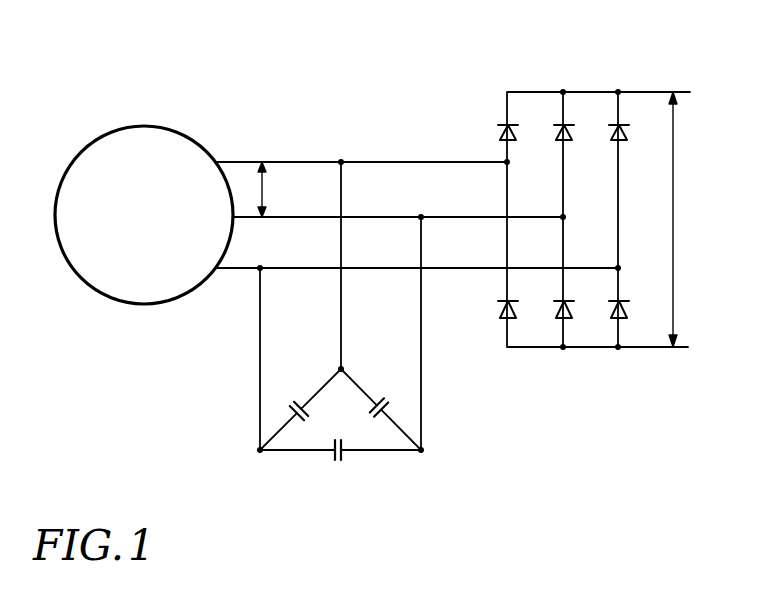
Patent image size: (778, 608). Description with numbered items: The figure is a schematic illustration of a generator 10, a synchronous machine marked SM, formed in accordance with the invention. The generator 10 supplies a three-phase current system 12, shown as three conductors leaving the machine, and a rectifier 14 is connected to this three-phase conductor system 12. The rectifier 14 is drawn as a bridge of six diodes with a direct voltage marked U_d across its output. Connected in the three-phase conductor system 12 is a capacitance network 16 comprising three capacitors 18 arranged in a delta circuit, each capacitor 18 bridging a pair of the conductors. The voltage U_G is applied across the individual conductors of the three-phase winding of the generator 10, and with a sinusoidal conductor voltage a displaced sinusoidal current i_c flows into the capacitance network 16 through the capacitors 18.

The generator 10 is at (274, 90).
The three-phase current system 12 is at (204, 326).
The rectifier 14 is at (580, 380).
The capacitance network 16 is at (236, 425).
The capacitor 18 is at (300, 394).